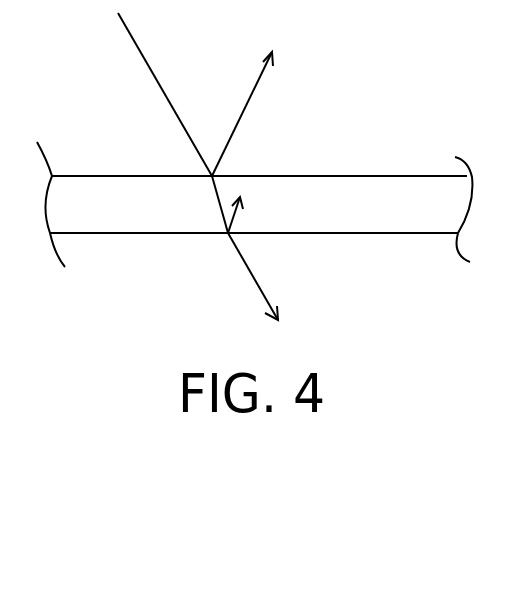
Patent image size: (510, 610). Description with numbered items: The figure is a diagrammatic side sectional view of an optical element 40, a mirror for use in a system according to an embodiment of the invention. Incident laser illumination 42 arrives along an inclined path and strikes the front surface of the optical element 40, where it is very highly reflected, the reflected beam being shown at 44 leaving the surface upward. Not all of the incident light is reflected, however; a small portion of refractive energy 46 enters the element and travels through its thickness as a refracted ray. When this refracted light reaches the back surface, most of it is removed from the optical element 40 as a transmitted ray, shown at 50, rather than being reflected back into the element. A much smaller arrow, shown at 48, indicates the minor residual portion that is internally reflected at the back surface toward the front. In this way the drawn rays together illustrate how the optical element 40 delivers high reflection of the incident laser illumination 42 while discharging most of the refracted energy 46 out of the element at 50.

The optical element 40 is at (400, 176).
The incident laser illumination 42 is at (152, 63).
The reflected illumination 44 is at (252, 97).
The refractive energy 46 is at (220, 205).
The internally reflected light ray 48 is at (236, 218).
The removed refractive energy 50 is at (250, 277).